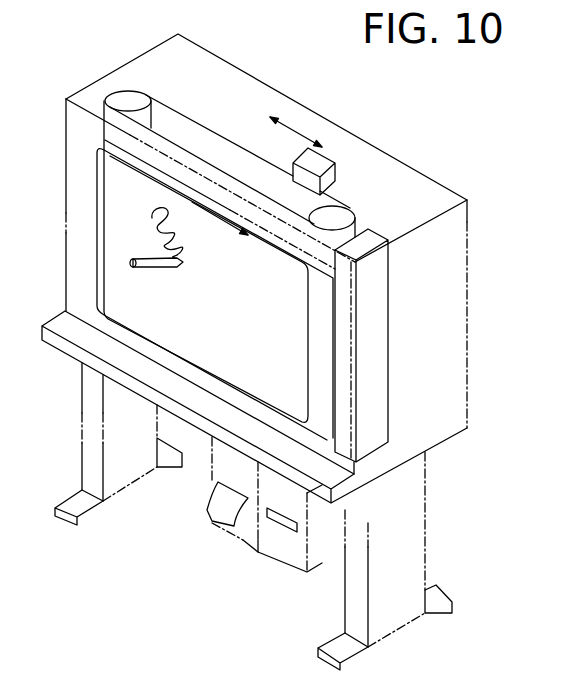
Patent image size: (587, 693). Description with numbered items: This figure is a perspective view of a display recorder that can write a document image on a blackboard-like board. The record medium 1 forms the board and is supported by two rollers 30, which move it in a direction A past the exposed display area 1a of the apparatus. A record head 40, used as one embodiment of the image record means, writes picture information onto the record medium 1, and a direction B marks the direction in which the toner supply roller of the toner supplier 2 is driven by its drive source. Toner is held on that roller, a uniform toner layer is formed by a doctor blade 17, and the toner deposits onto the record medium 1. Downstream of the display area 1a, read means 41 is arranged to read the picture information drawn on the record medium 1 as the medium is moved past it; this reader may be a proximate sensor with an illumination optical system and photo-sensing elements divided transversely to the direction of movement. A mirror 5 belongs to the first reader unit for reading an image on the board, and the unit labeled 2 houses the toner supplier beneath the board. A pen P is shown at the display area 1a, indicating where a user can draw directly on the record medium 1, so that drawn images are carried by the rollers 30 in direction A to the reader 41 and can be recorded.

The record medium 1 is at (120, 202).
The display area 1a is at (97, 272).
The rollers 30 is at (123, 97).
The record head 40 is at (330, 178).
The read means 41 is at (373, 298).
The doctor blade 17 is at (210, 498).
The mirror 5 is at (245, 532).
The toner supplier 2 is at (283, 550).
The pen P is at (167, 255).
The direction A is at (218, 225).
The direction B is at (293, 117).